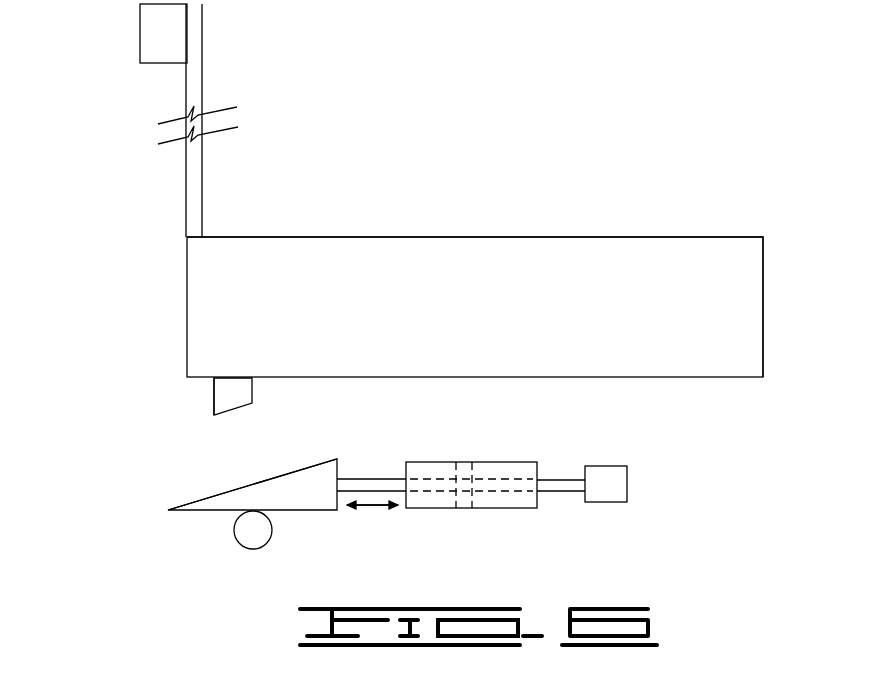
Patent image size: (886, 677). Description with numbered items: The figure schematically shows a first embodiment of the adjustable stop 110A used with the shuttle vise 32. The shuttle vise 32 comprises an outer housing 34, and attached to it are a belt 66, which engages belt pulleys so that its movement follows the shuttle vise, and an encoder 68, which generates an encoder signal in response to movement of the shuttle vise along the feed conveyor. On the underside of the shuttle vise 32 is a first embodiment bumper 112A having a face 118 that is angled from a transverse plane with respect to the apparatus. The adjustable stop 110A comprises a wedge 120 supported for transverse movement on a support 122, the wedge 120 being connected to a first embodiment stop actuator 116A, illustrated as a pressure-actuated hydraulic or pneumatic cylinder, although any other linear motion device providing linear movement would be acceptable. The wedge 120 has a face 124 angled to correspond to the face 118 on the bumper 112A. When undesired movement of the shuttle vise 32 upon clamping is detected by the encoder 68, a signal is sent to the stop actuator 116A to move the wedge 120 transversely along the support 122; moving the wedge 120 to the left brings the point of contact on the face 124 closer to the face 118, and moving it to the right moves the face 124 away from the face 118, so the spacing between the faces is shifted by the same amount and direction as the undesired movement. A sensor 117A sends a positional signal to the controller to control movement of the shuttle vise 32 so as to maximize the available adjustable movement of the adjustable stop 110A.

The shuttle vise 32 is at (474, 232).
The outer housing 34 is at (700, 248).
The belt 66 is at (198, 182).
The encoder reader 68 is at (148, 42).
The adjustable stop 110A is at (696, 462).
The bumper 112A is at (223, 402).
The stop actuator 116A is at (508, 508).
The sensor 117A is at (598, 470).
The face 118 is at (242, 407).
The wedge 120 is at (297, 503).
The support 122 is at (245, 535).
The face 124 is at (232, 488).